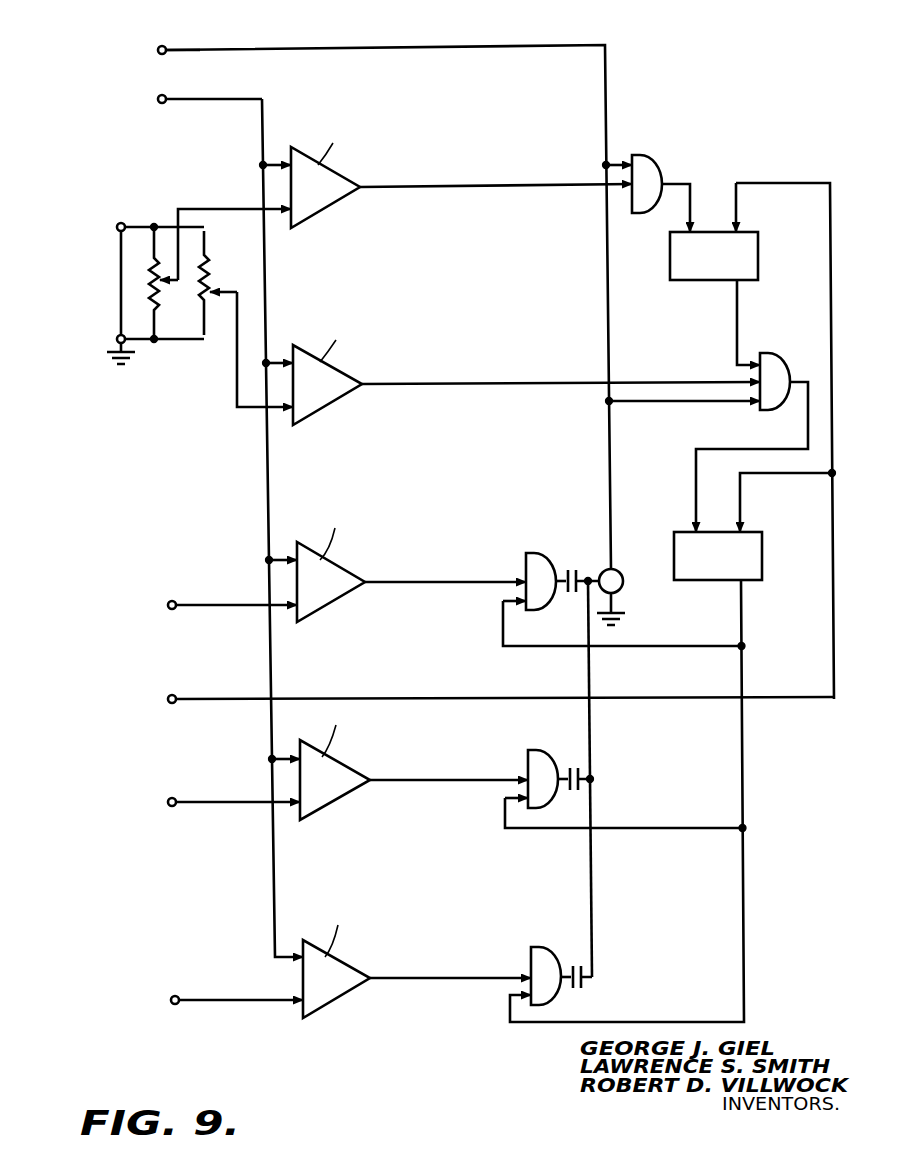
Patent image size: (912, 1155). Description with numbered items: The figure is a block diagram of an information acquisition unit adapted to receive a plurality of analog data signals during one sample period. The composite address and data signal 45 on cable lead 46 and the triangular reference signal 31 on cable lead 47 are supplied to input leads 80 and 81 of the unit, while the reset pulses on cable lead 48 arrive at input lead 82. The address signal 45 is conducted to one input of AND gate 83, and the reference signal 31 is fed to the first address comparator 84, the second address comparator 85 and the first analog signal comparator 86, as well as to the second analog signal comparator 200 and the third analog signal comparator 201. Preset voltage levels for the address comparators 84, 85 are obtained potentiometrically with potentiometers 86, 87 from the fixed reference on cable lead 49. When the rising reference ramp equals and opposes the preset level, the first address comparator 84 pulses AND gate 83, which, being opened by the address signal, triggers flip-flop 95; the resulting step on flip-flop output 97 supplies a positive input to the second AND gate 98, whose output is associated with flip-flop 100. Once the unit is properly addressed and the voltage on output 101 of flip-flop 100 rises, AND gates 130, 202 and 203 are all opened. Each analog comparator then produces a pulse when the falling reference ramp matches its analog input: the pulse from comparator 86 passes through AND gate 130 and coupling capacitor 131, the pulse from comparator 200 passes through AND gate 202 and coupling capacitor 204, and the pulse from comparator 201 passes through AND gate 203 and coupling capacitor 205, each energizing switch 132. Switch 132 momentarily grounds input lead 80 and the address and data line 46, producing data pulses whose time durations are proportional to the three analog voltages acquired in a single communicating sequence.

The triangular reference signal 31 is at (214, 87).
The composite address and data signal 45 is at (388, 297).
The cable lead 46 is at (107, 61).
The cable lead 47 is at (107, 106).
The cable lead 48 is at (112, 702).
The cable lead 49 is at (109, 283).
The input lead 80 is at (190, 50).
The input lead 81 is at (168, 103).
The input lead 82 is at (242, 698).
The AND gate 83 is at (652, 164).
The first address comparator 84 is at (330, 207).
The second address comparator 85 is at (338, 405).
The first analog signal comparator 86 is at (158, 315).
The potentiometer 87 is at (215, 302).
The flip-flop 95 is at (758, 249).
The flip-flop output 97 is at (737, 324).
The second AND gate 98 is at (782, 358).
The flip-flop 100 is at (762, 548).
The flip-flop output lead 101 is at (742, 612).
The AND gate 130 is at (546, 565).
The coupling capacitor 131 is at (572, 594).
The switch 132 is at (620, 570).
The second analog signal comparator 200 is at (340, 801).
The third analog signal comparator 201 is at (340, 999).
The AND gate 202 is at (548, 763).
The AND gate 203 is at (550, 962).
The coupling capacitor 204 is at (574, 792).
The coupling capacitor 205 is at (577, 990).